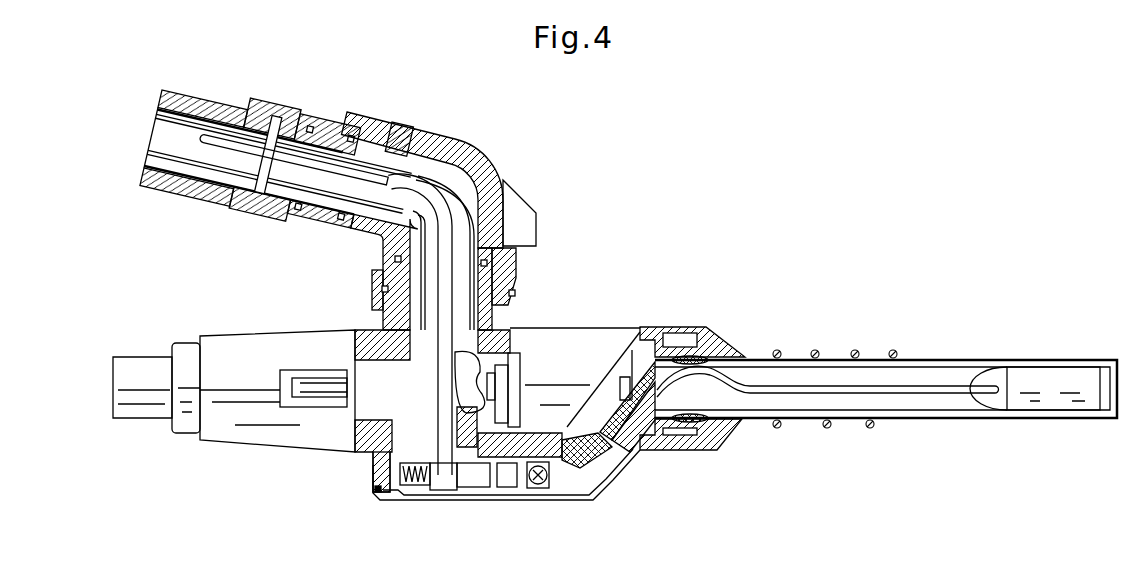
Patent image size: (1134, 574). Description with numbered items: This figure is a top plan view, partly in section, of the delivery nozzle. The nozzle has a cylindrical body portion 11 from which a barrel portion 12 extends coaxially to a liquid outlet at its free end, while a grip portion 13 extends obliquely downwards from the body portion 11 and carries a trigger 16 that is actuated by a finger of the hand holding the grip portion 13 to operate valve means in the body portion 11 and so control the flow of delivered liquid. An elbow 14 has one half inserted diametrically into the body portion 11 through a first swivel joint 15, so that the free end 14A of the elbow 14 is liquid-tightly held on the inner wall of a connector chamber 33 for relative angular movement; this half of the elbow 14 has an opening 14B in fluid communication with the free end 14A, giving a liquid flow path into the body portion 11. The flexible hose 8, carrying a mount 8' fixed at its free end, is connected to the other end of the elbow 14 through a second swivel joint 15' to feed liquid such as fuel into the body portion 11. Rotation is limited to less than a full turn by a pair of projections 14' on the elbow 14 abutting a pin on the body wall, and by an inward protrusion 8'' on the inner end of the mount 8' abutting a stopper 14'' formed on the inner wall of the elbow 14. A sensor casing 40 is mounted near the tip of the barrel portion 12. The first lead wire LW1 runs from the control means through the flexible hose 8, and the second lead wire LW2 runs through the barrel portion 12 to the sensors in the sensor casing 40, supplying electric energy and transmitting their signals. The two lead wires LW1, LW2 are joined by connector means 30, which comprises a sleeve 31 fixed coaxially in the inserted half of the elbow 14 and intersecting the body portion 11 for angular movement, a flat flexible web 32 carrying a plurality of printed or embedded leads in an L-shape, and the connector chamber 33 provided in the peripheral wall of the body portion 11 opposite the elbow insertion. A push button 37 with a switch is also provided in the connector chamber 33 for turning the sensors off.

The flexible hose 8 is at (284, 144).
The mount 8' is at (274, 132).
The inward protrusion 8'' is at (408, 118).
The second swivel joint 15' is at (333, 136).
The elbow 14 is at (423, 219).
The projections 14' is at (539, 207).
The stopper 14'' is at (427, 278).
The first swivel joint 15 is at (470, 279).
The opening 14B is at (478, 356).
The sleeve 31 is at (463, 384).
The cylindrical body portion 11 is at (363, 330).
The grip portion 13 is at (140, 410).
The trigger 16 is at (318, 392).
The free end of the elbow 14A is at (374, 457).
The push button 37 is at (378, 493).
The flat and flexible web 32 is at (480, 472).
The connector means 30 is at (479, 506).
The connector chamber 33 is at (511, 498).
The barrel portion 12 is at (921, 360).
The sensor casing 40 is at (1053, 376).
The first lead wire LW1 is at (227, 152).
The second lead wire LW2 is at (912, 394).